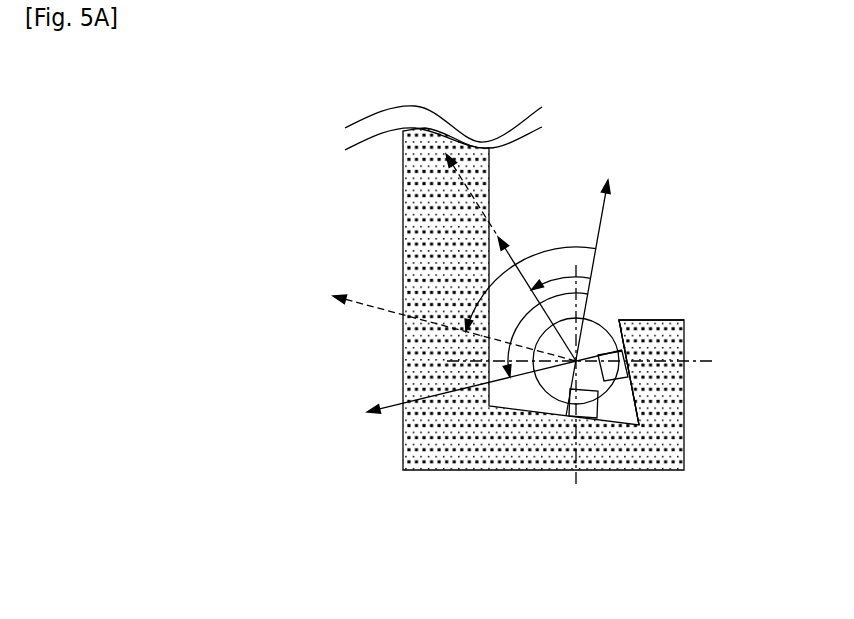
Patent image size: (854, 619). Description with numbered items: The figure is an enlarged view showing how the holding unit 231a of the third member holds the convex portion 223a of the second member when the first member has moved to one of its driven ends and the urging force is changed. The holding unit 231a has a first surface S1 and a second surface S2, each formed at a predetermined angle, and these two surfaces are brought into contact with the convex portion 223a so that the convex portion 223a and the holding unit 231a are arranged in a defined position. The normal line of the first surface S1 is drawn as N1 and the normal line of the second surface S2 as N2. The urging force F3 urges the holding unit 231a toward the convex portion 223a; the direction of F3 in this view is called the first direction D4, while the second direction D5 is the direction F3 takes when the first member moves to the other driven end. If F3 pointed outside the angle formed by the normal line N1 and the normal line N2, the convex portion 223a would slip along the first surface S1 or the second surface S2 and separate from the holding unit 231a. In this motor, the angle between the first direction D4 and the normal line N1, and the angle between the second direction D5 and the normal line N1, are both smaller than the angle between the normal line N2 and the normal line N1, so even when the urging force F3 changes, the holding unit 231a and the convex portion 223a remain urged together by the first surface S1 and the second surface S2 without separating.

The convex portion 223a is at (533, 405).
The holding unit 231a is at (608, 428).
The first surface S1 is at (555, 380).
The second surface S2 is at (622, 342).
The normal line of the first surface N1 is at (608, 295).
The normal line of the second surface N2 is at (489, 381).
The urging force F3 is at (537, 285).
The first direction D4 is at (454, 194).
The second direction D5 is at (454, 315).